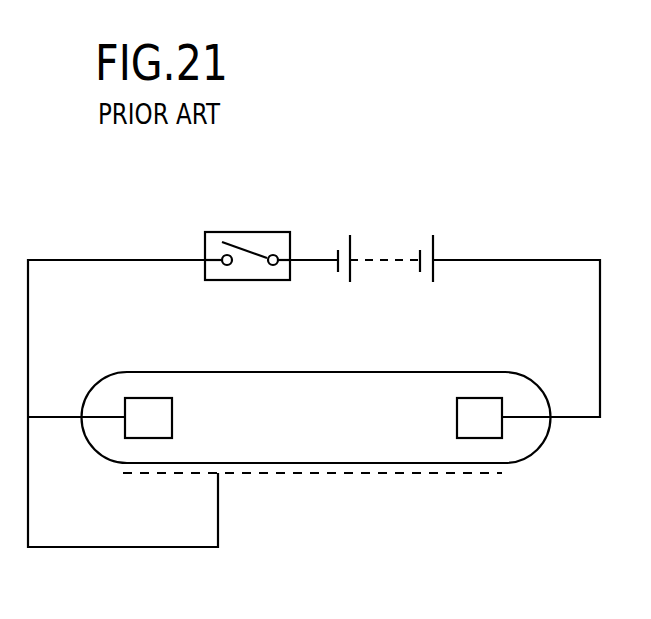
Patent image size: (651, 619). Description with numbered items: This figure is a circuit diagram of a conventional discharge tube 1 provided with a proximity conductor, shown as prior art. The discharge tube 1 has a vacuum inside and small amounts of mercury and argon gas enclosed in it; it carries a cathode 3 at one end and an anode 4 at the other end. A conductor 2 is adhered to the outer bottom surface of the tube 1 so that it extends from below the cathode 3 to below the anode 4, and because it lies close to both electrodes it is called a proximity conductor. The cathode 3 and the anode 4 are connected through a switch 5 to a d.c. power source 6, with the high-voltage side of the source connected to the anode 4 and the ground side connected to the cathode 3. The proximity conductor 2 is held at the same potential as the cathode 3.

The discharge tube 1 is at (319, 372).
The conductor 2 is at (328, 476).
The cathode 3 is at (148, 398).
The anode 4 is at (482, 398).
The switch 5 is at (257, 232).
The d.c. power source 6 is at (434, 237).